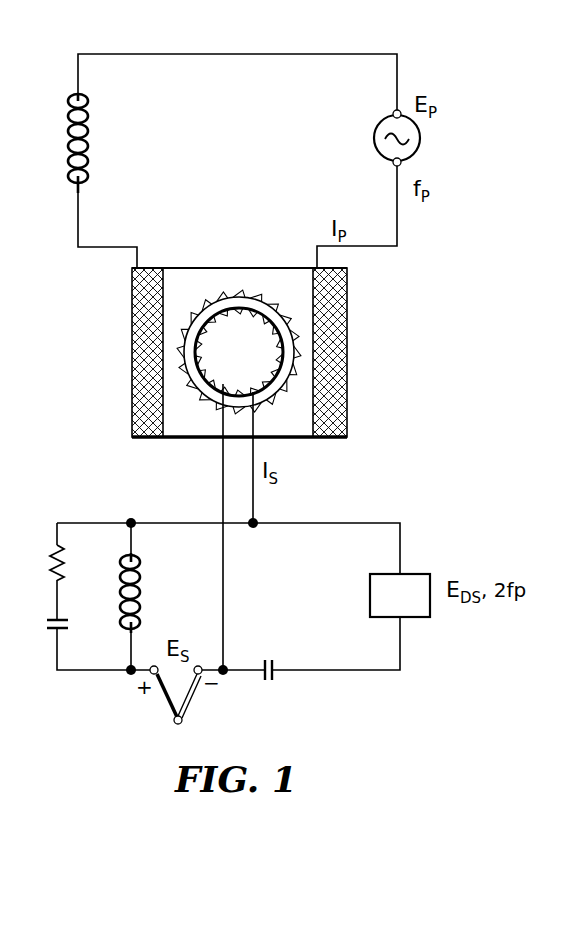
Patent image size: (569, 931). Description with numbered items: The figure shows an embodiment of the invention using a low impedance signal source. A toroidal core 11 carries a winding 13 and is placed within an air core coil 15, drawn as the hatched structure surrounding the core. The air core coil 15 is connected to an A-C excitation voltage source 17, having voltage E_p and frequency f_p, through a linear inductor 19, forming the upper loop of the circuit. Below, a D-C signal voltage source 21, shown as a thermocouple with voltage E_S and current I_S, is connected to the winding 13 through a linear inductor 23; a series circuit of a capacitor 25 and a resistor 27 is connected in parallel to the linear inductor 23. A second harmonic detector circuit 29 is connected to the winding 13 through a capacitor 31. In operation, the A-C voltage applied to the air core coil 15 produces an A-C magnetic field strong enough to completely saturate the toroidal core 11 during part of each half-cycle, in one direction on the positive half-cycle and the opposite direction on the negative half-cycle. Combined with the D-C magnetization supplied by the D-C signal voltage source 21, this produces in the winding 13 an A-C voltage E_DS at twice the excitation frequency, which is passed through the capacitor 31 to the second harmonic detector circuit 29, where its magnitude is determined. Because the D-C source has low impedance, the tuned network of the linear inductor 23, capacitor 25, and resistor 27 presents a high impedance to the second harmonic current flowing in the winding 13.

The toroidal core 11 is at (236, 393).
The winding 13 is at (211, 383).
The air core coil 15 is at (132, 343).
The A-C excitation voltage source 17 is at (421, 143).
The linear inductor 19 is at (88, 163).
The D-C signal voltage source 21 is at (196, 693).
The linear inductor 23 is at (140, 571).
The capacitor 25 is at (52, 629).
The resistor 27 is at (52, 548).
The second harmonic detector circuit 29 is at (412, 573).
The capacitor 31 is at (275, 676).